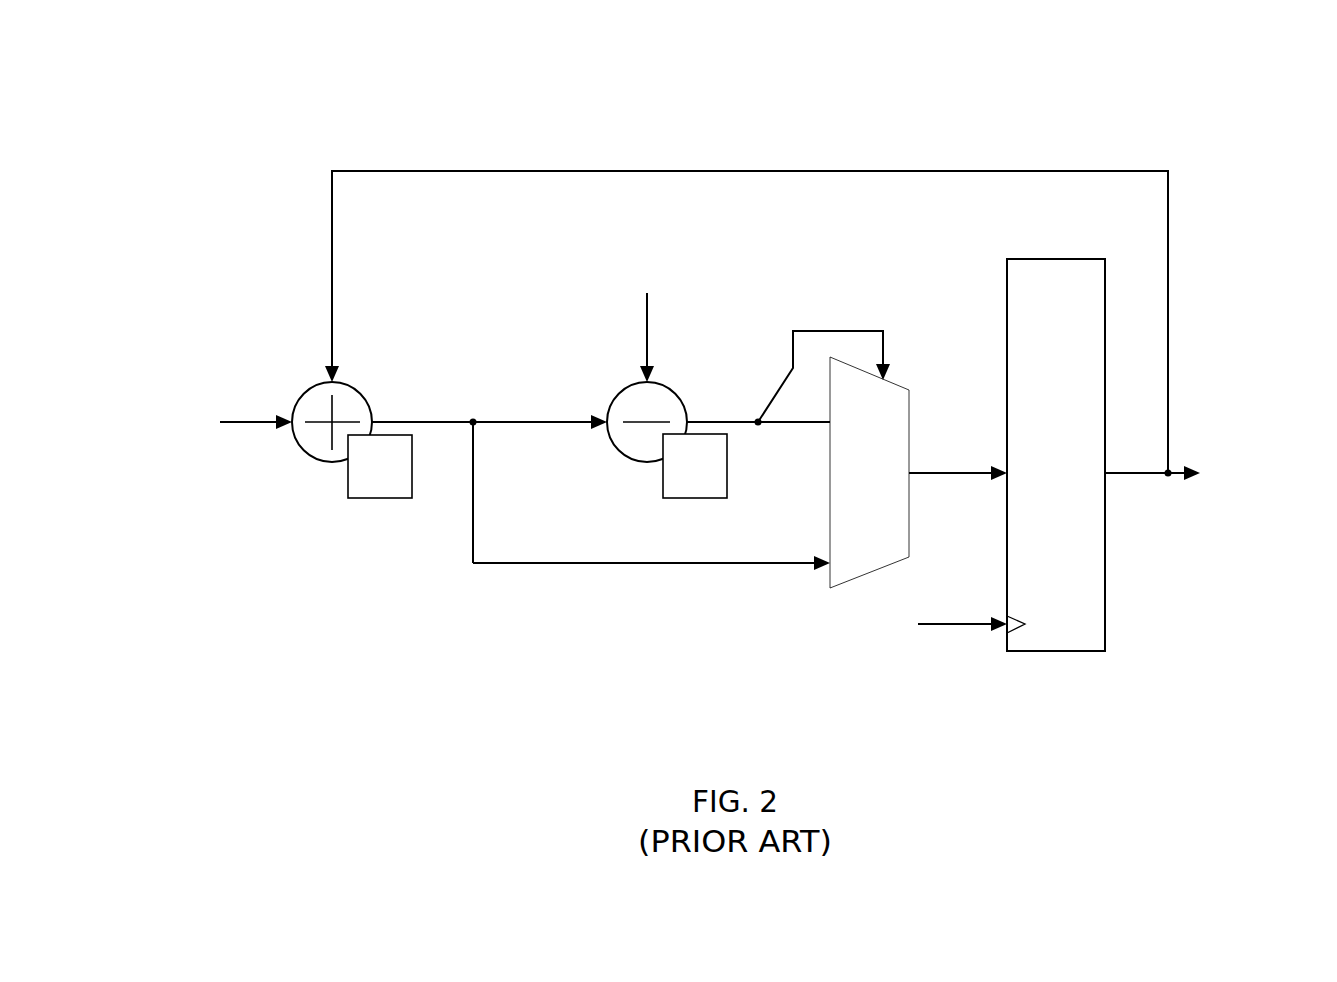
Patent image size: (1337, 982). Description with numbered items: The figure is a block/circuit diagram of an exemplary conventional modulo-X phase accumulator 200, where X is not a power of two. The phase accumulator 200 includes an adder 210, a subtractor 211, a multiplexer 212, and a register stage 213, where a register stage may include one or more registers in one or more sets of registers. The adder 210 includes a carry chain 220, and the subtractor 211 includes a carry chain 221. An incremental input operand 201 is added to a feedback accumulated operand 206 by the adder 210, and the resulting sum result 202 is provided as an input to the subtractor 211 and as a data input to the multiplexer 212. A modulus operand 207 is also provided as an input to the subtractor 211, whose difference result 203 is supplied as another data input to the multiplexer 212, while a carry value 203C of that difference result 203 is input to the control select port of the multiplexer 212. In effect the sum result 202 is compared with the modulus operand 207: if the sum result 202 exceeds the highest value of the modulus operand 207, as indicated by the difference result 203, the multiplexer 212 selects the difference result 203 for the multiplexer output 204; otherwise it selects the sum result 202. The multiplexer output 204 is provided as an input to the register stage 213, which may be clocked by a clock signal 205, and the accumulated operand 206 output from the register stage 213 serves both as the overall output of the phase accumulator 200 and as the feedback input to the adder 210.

The phase accumulator 200 is at (1138, 58).
The input operand 201 is at (240, 422).
The sum result 202 is at (413, 418).
The difference result 203 is at (722, 417).
The carry value 203C is at (812, 330).
The multiplexer output 204 is at (950, 470).
The clock signal 205 is at (918, 624).
The accumulated operand 206 is at (455, 171).
The modulus operand 207 is at (650, 311).
The adder 210 is at (367, 393).
The subtractor 211 is at (628, 382).
The multiplexer 212 is at (827, 490).
The register stage 213 is at (1005, 278).
The carry chain 220 is at (380, 466).
The carry chain 221 is at (695, 466).